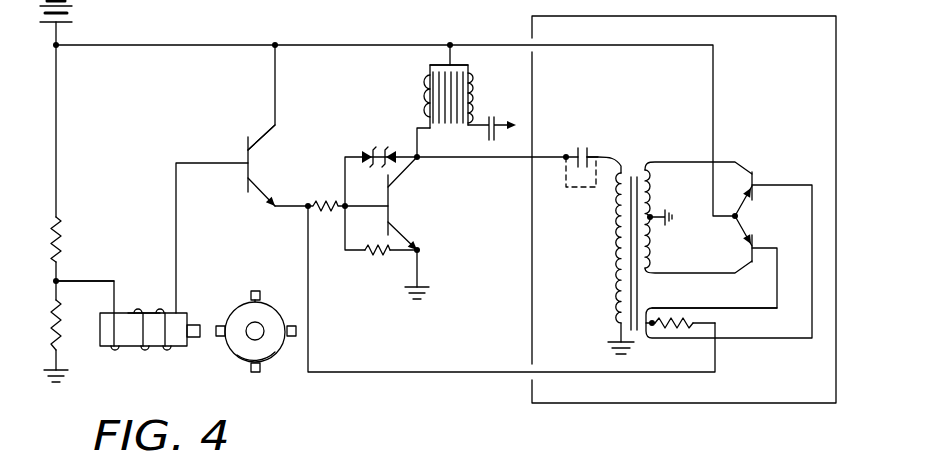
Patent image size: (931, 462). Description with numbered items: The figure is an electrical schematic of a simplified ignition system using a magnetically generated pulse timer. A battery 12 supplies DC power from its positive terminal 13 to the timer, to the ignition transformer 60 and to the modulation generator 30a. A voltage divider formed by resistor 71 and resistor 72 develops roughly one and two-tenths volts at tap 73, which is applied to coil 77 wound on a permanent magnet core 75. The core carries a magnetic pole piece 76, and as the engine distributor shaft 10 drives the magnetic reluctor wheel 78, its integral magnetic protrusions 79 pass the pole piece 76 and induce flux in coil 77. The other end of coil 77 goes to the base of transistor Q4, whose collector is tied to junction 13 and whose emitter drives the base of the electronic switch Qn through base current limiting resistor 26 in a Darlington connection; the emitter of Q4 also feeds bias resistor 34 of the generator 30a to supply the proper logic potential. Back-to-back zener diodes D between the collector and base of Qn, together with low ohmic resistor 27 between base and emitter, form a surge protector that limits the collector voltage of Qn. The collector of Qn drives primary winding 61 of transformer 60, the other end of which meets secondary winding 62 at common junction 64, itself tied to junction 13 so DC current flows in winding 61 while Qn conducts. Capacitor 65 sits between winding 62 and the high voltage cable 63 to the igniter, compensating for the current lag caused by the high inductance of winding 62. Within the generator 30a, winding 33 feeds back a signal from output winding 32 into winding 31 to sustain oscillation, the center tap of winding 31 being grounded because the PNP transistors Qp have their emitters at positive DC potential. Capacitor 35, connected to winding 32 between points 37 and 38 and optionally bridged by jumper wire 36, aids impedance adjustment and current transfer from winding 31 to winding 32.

The battery 12 is at (72, 22).
The positive terminal 13 is at (55, 46).
The resistor 71 is at (60, 240).
The resistor 72 is at (63, 316).
The voltage divider tap 73 is at (58, 280).
The permanent magnet core 75 is at (107, 344).
The coil 77 is at (143, 348).
The magnetic pole piece 76 is at (197, 338).
The engine distributor shaft 10 is at (255, 331).
The magnetic reluctor wheel 78 is at (267, 352).
The magnetic protrusions 79 is at (296, 326).
The transistor Q4 is at (267, 165).
The base current limiting resistor 26 is at (327, 202).
The diode D is at (379, 150).
The electronic switch transistor Qn is at (407, 203).
The low ohmic valued resistor 27 is at (378, 252).
The ignition transformer 60 is at (452, 131).
The primary winding 61 is at (421, 96).
The secondary winding 62 is at (479, 87).
The high voltage lead or cable 63 is at (514, 128).
The common junction 64 is at (448, 64).
The capacitor 65 is at (490, 101).
The alternating current modulation generator 30a is at (650, 408).
The jumper point 38 is at (566, 156).
The capacitor 35 is at (572, 125).
The jumper wire 36 is at (583, 190).
The jumper point 37 is at (592, 157).
The output winding 32 is at (617, 256).
The winding 31 is at (653, 240).
The feedback winding 33 is at (650, 306).
The bias resistor 34 is at (690, 319).
The PNP transistors Qp is at (736, 216).